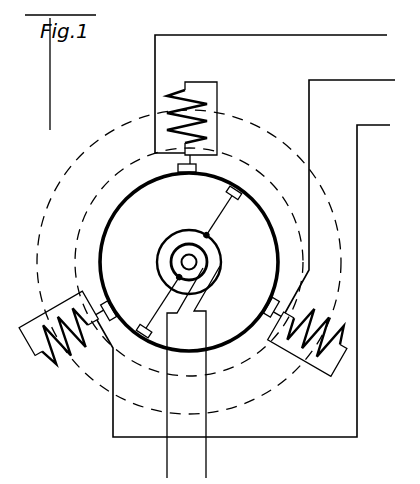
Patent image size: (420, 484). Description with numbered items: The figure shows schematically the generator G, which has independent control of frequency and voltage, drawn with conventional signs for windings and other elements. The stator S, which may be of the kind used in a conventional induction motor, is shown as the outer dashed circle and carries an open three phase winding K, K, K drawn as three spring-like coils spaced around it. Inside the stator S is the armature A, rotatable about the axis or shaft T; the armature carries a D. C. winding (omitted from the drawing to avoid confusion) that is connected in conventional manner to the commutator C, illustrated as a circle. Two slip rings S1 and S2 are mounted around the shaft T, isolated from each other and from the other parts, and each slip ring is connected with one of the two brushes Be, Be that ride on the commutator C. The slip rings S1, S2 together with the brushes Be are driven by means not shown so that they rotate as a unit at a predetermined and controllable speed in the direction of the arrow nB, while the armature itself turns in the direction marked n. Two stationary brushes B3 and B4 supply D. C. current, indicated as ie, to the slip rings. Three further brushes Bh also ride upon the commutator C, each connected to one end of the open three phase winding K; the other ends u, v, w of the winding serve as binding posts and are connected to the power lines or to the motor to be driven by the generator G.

The generator G is at (98, 96).
The stator S is at (66, 170).
The direction of rotation of slip rings and brushes nB is at (277, 193).
The armature A is at (189, 262).
The rotor speed n is at (107, 207).
The commutator C is at (240, 214).
The open three phase winding K is at (187, 228).
The brush Bh is at (196, 168).
The brush Be is at (189, 262).
The slip ring S1 is at (166, 247).
The slip ring S2 is at (208, 253).
The shaft T is at (188, 253).
The stationary brush B3 is at (203, 295).
The stationary brush B4 is at (195, 305).
The excitation current ie is at (201, 462).
The winding end u is at (271, 86).
The winding end v is at (340, 189).
The winding end w is at (243, 273).